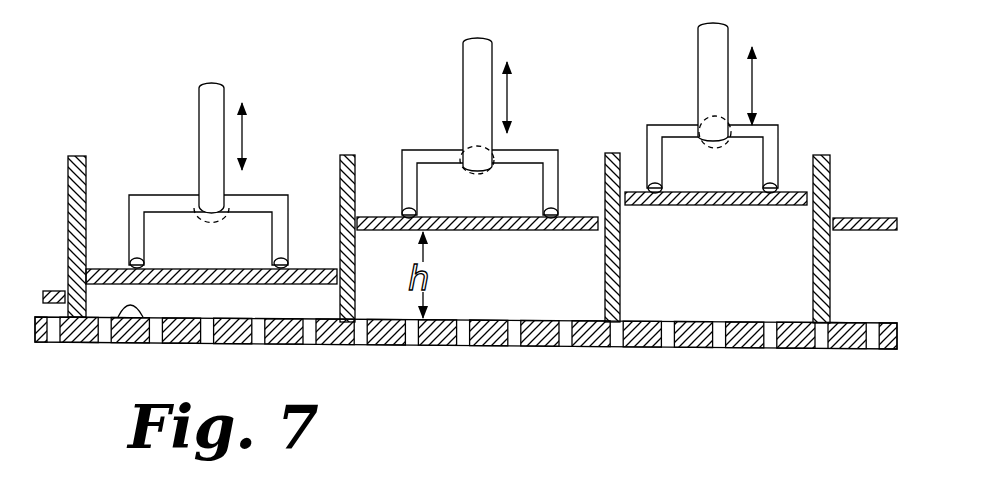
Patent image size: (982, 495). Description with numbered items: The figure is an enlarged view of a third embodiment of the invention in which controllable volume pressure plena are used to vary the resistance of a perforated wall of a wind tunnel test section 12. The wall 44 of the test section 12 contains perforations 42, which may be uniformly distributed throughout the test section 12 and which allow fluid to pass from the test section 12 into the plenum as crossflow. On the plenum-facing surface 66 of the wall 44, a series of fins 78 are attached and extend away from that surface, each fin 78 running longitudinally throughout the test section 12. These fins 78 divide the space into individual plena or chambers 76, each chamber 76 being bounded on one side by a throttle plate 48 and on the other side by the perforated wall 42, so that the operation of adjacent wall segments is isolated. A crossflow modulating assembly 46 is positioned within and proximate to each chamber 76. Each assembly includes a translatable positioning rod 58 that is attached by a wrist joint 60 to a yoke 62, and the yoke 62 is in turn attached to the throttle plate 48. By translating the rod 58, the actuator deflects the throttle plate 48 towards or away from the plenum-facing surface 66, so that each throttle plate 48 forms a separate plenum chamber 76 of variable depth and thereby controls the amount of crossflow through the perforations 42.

The test section 12 is at (468, 418).
The perforations 42 is at (548, 372).
The wall 44 is at (750, 343).
The crossflow modulating assembly 46 is at (192, 110).
The throttle plate 48 is at (55, 290).
The positioning rod 58 is at (226, 98).
The wrist joint 60 is at (708, 122).
The yoke 62 is at (265, 200).
The plenum-facing surface 66 is at (143, 318).
The chamber 76 is at (260, 298).
The fin 78 is at (87, 215).